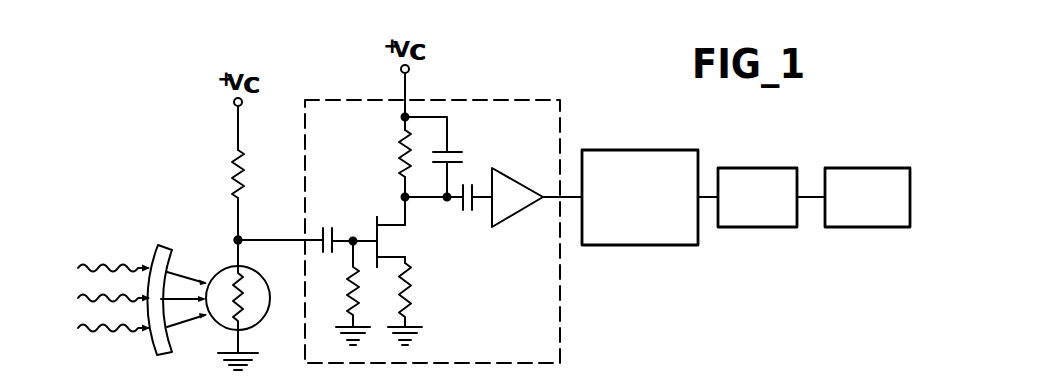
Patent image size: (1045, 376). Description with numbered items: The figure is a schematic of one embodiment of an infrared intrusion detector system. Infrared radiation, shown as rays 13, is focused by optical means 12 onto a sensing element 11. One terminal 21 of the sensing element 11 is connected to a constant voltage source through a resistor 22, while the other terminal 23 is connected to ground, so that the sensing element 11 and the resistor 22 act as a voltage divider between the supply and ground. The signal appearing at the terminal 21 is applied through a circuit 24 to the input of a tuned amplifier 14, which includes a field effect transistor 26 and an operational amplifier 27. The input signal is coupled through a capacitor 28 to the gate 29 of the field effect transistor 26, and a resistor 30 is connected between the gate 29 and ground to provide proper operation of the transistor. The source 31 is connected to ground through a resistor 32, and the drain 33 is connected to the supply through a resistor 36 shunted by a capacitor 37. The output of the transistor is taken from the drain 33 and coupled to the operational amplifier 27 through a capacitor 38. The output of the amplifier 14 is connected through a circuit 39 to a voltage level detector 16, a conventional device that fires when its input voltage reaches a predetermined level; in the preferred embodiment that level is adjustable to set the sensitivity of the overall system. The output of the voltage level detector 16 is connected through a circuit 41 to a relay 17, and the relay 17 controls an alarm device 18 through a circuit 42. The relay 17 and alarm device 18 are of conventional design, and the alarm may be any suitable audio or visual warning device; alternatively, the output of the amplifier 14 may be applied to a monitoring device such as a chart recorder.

The sensing element 11 is at (263, 273).
The optical means 12 is at (160, 246).
The rays 13 is at (110, 331).
The tuned amplifier 14 is at (520, 101).
The voltage level detector 16 is at (650, 149).
The relay 17 is at (768, 167).
The alarm device 18 is at (865, 167).
The terminal 21 is at (237, 258).
The resistor 22 is at (235, 165).
The terminal 23 is at (245, 342).
The circuit 24 is at (265, 240).
The field effect transistor 26 is at (363, 214).
The operational amplifier 27 is at (520, 215).
The capacitor 28 is at (332, 218).
The gate 29 is at (374, 224).
The resistor 30 is at (348, 293).
The source 31 is at (402, 257).
The resistor 32 is at (417, 293).
The drain 33 is at (398, 228).
The resistor 36 is at (402, 148).
The capacitor 37 is at (463, 155).
The capacitor 38 is at (467, 212).
The circuit 39 is at (567, 200).
The circuit 41 is at (710, 200).
The circuit 42 is at (813, 200).